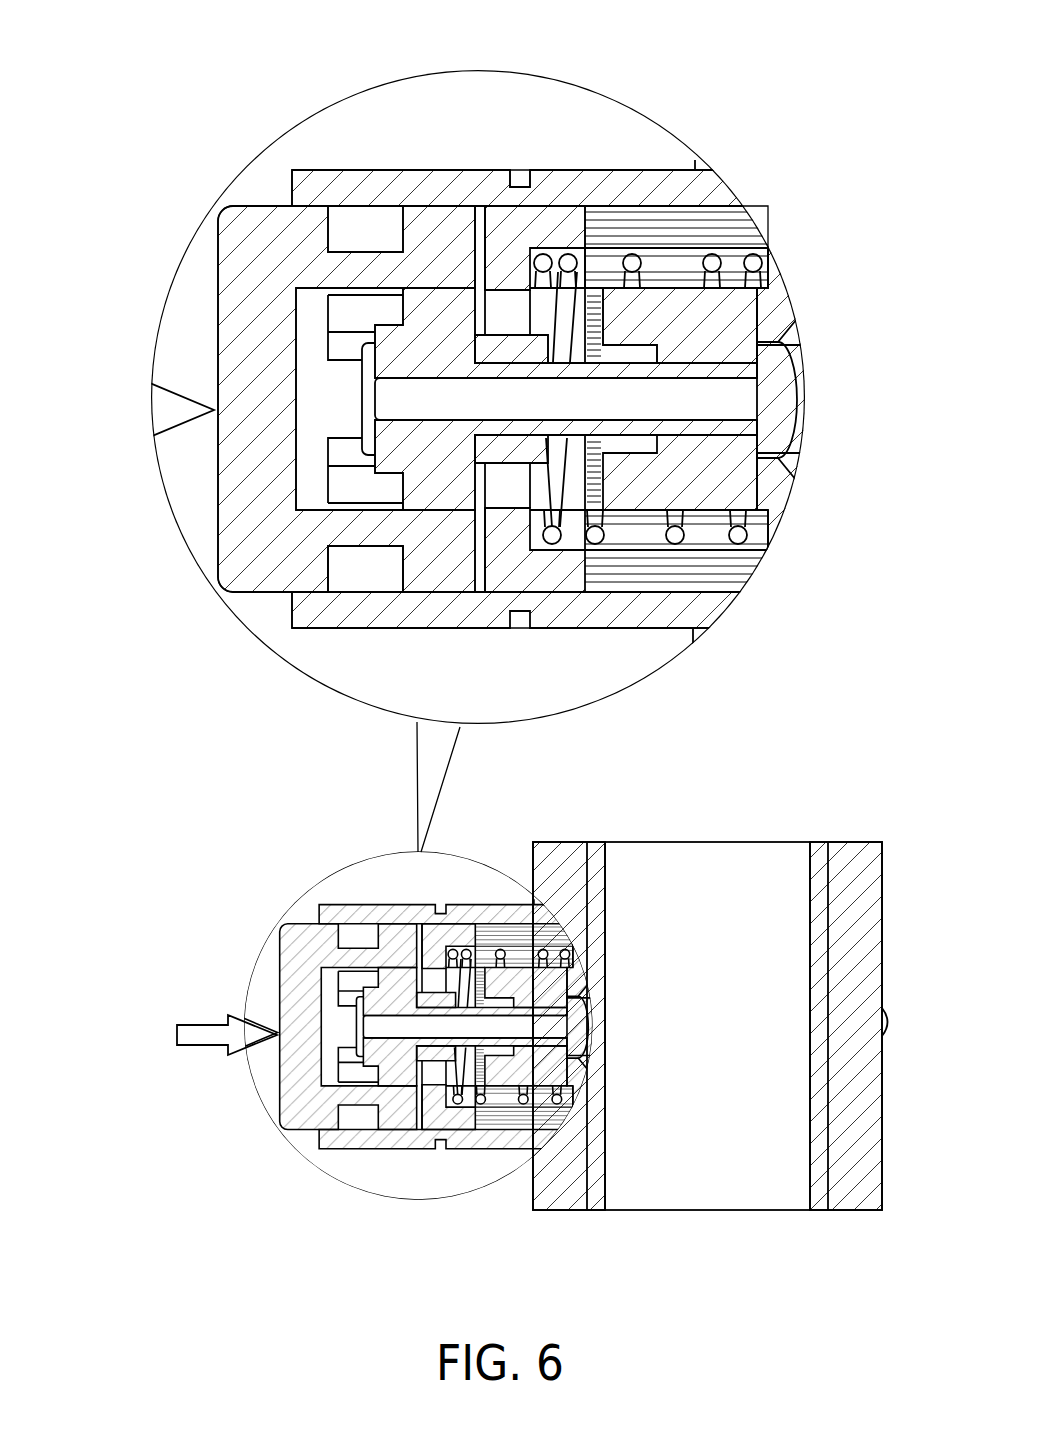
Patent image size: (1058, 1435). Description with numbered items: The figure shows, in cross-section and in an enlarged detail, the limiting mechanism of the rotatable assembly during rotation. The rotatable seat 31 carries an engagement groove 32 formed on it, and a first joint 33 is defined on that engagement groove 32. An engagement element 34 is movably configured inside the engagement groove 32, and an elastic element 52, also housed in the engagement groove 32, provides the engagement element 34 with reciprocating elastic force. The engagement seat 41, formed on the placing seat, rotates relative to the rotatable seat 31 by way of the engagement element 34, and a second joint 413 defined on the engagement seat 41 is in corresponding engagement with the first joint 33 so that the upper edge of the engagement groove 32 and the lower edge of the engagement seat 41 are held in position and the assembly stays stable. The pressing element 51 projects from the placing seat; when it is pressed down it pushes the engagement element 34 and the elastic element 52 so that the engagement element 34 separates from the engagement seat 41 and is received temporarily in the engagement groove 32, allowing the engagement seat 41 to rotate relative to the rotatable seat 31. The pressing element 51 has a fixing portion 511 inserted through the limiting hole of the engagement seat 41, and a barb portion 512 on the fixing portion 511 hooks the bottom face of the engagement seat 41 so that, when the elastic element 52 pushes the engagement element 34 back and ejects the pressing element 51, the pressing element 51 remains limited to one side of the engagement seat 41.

The rotatable seat 31 is at (645, 620).
The engagement groove 32 is at (670, 241).
The first joint 33 is at (510, 184).
The second joint 413 is at (510, 184).
The engagement element 34 is at (545, 582).
The engagement seat 41 is at (390, 600).
The pressing element 51 is at (218, 297).
The fixing portion 511 is at (370, 550).
The barb portion 512 is at (482, 203).
The elastic element 52 is at (702, 262).